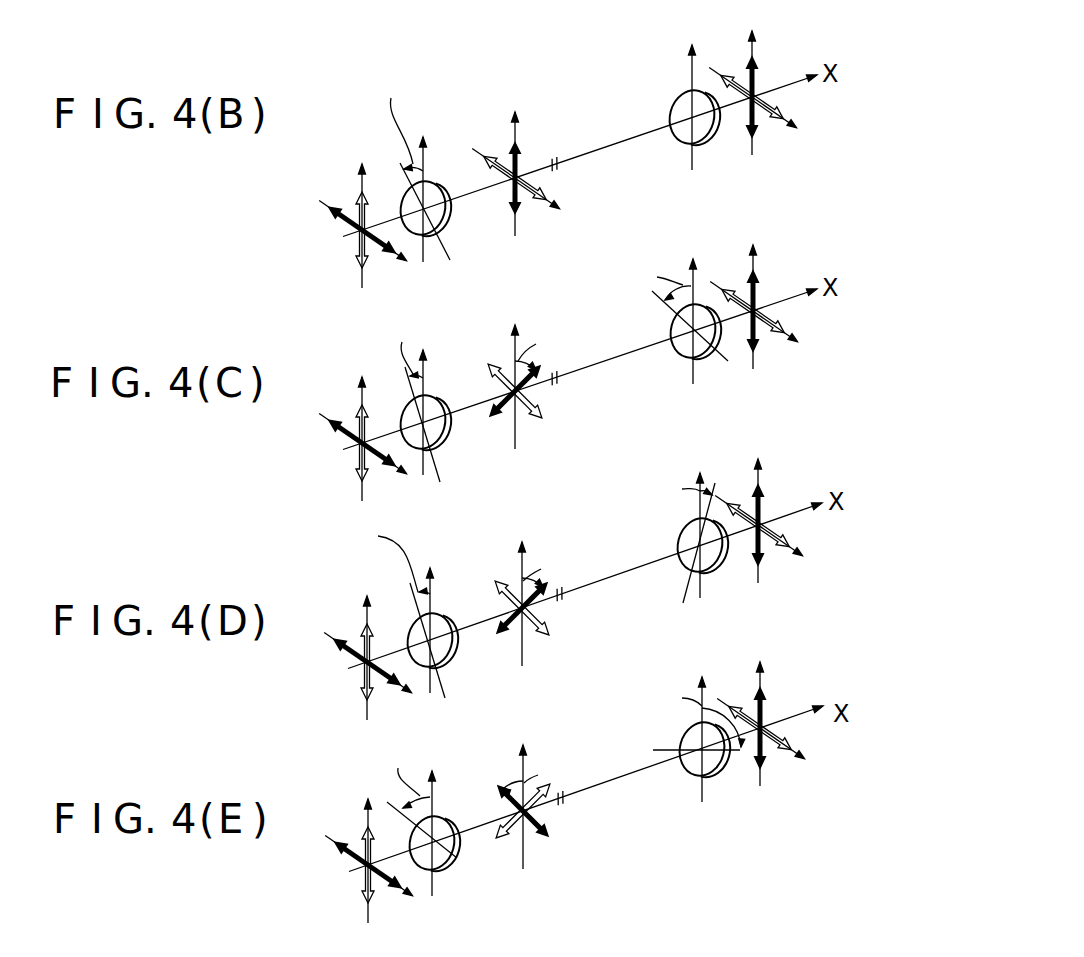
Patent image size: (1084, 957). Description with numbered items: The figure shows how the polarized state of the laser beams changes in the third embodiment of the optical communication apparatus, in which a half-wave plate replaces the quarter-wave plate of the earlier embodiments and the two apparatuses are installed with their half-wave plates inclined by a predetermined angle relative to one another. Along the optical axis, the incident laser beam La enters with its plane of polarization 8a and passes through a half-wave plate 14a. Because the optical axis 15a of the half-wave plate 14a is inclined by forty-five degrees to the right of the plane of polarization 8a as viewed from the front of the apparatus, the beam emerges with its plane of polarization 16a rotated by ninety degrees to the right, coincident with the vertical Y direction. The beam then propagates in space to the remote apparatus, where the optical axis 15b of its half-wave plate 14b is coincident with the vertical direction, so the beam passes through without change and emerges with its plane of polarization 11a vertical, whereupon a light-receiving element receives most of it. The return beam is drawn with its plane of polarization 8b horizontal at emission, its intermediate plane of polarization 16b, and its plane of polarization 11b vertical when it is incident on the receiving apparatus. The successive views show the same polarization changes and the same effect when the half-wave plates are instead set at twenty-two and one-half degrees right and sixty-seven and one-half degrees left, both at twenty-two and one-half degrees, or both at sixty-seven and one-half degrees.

In FIG. 4B, the plane of polarization of the incident laser beam La 8a is at (349, 211).
In FIG. 4C, the plane of polarization of the incident laser beam La 8a is at (351, 426).
In FIG. 4D, the plane of polarization of the incident laser beam La 8a is at (354, 646).
In FIG. 4E, the plane of polarization of the incident laser beam La 8a is at (358, 846).
In FIG. 4B, the plane of polarization of laser beam Lb 8b is at (775, 120).
In FIG. 4C, the plane of polarization of laser beam Lb 8b is at (775, 337).
In FIG. 4D, the plane of polarization of laser beam Lb 8b is at (782, 546).
In FIG. 4E, the plane of polarization of laser beam Lb 8b is at (784, 751).
In FIG. 4B, the plane of polarization of laser beam La emerging from half-wave plate 14b 11a is at (762, 62).
In FIG. 4C, the plane of polarization of laser beam La emerging from half-wave plate 14b 11a is at (762, 272).
In FIG. 4D, the plane of polarization of laser beam La emerging from half-wave plate 14b 11a is at (764, 480).
In FIG. 4E, the plane of polarization of laser beam La emerging from half-wave plate 14b 11a is at (762, 694).
In FIG. 4B, the plane of polarization of laser beam Lb incident on the apparatus 11b is at (356, 266).
In FIG. 4C, the plane of polarization of laser beam Lb incident on the apparatus 11b is at (358, 479).
In FIG. 4D, the plane of polarization of laser beam Lb incident on the apparatus 11b is at (363, 698).
In FIG. 4E, the plane of polarization of laser beam Lb incident on the apparatus 11b is at (364, 902).
In FIG. 4B, the half-wave plate 14a is at (443, 178).
In FIG. 4C, the half-wave plate 14a is at (448, 394).
In FIG. 4D, the half-wave plate 14a is at (456, 614).
In FIG. 4E, the half-wave plate 14a is at (452, 838).
In FIG. 4B, the half-wave plate 14b is at (670, 99).
In FIG. 4C, the half-wave plate 14b is at (674, 354).
In FIG. 4D, the half-wave plate 14b is at (678, 538).
In FIG. 4E, the half-wave plate 14b is at (678, 737).
In FIG. 4B, the optical axis of half-wave plate 14a 15a is at (450, 257).
In FIG. 4C, the optical axis of half-wave plate 14a 15a is at (438, 484).
In FIG. 4D, the optical axis of half-wave plate 14a 15a is at (442, 696).
In FIG. 4E, the optical axis of half-wave plate 14a 15a is at (454, 864).
In FIG. 4B, the optical axis of half-wave plate 14b 15b is at (690, 160).
In FIG. 4C, the optical axis of half-wave plate 14b 15b is at (730, 363).
In FIG. 4D, the optical axis of half-wave plate 14b 15b is at (704, 586).
In FIG. 4E, the optical axis of half-wave plate 14b 15b is at (736, 756).
In FIG. 4B, the plane of polarization of laser beam La emerging from half-wave plate 14a 16a is at (513, 204).
In FIG. 4C, the plane of polarization of laser beam La emerging from half-wave plate 14a 16a is at (516, 421).
In FIG. 4D, the plane of polarization of laser beam La emerging from half-wave plate 14a 16a is at (521, 639).
In FIG. 4E, the plane of polarization of laser beam La emerging from half-wave plate 14a 16a is at (554, 836).
In FIG. 4B, the plane of polarization of laser beam Lb in the middle of the link 16b is at (540, 196).
In FIG. 4C, the plane of polarization of laser beam Lb in the middle of the link 16b is at (546, 414).
In FIG. 4D, the plane of polarization of laser beam Lb in the middle of the link 16b is at (553, 628).
In FIG. 4E, the plane of polarization of laser beam Lb in the middle of the link 16b is at (496, 840).